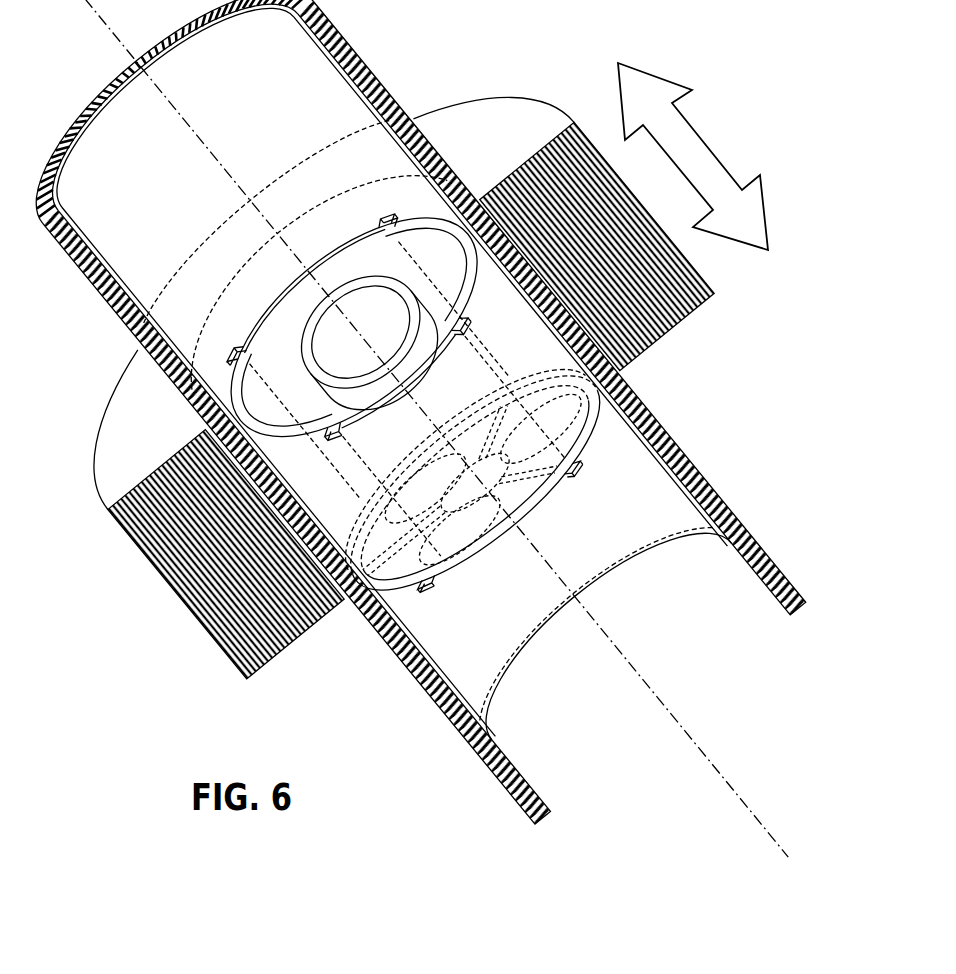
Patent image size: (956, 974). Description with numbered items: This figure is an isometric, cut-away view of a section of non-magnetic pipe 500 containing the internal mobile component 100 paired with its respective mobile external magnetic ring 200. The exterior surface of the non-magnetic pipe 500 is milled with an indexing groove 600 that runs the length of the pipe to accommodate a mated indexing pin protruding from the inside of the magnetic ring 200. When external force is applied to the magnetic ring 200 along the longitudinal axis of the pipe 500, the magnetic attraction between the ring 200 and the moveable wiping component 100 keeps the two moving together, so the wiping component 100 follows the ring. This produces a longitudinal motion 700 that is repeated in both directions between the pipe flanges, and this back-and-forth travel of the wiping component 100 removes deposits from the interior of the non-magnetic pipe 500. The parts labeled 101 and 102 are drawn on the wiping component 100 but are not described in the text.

The internal mobile component 100 is at (357, 331).
The support ring with spider frame 101 is at (543, 508).
The locking tabs 102 is at (240, 372).
The mobile external magnetic ring 200 is at (377, 359).
The non-magnetic pipe 500 is at (459, 735).
The indexing groove 600 is at (622, 372).
The longitudinal motion 700 is at (693, 156).